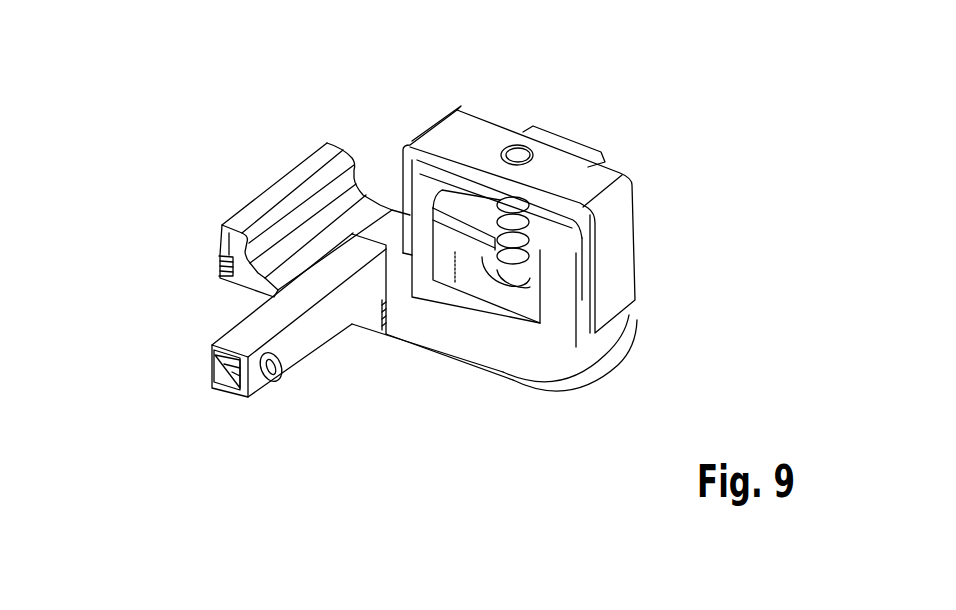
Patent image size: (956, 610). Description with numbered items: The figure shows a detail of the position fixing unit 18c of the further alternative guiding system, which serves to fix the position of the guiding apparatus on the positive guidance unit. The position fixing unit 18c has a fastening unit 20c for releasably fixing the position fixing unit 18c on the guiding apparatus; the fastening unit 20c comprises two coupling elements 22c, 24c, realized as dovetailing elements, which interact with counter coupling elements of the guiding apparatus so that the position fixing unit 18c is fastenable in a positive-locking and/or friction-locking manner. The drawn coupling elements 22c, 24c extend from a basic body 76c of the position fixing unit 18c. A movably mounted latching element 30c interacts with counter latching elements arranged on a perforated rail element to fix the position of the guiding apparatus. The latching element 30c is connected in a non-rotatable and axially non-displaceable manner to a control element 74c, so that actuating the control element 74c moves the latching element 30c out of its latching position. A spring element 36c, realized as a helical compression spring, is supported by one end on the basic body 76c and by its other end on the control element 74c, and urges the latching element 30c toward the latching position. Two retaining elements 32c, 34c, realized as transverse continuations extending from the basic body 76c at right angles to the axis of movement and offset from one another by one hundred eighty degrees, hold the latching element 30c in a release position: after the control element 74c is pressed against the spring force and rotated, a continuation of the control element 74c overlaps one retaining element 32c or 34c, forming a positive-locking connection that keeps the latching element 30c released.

The position fixing unit 18c is at (638, 120).
The fastening unit 20c is at (156, 319).
The coupling element 22c is at (215, 373).
The coupling element 24c is at (233, 254).
The latching element 30c is at (522, 283).
The retaining element 32c is at (568, 250).
The retaining element 34c is at (403, 172).
The spring element 36c is at (540, 262).
The control element 74c is at (560, 137).
The basic body 76c is at (449, 333).